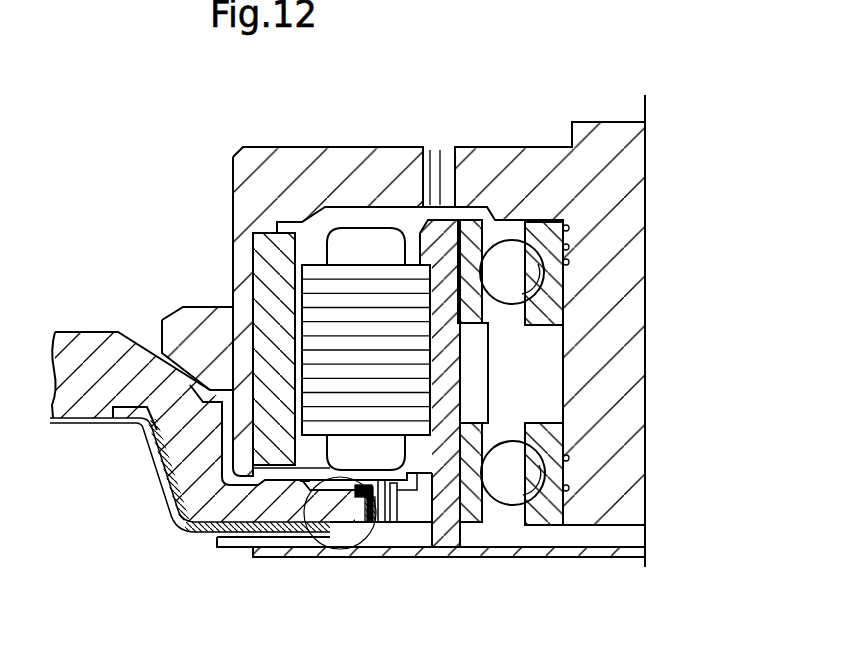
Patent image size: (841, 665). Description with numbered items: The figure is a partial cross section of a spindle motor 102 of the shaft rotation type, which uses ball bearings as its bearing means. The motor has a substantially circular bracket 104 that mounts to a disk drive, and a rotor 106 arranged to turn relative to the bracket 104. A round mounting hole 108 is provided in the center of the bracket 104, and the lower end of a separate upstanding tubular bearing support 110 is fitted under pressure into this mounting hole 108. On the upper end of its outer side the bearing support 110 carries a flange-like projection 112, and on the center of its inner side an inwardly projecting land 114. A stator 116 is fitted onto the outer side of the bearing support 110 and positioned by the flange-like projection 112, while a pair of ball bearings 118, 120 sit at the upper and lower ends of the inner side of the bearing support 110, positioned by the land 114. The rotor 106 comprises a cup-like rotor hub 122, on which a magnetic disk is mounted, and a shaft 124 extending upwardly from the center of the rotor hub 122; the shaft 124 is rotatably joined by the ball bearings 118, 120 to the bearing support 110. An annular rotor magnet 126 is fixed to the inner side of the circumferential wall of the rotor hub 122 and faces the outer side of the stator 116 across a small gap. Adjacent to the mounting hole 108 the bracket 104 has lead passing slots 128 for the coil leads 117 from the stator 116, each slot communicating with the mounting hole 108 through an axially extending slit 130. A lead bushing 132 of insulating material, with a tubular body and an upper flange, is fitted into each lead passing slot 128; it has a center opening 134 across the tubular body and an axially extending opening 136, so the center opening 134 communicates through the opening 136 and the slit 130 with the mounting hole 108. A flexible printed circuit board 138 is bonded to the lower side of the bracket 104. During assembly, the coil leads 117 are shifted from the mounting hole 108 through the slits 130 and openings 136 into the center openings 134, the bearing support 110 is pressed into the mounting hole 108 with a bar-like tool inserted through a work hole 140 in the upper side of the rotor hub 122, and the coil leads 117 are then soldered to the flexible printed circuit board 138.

The spindle motor 102 is at (408, 81).
The bracket 104 is at (178, 465).
The rotor 106 is at (411, 315).
The mounting hole 108 is at (510, 545).
The bearing support 110 is at (452, 243).
The flange-like projection 112 is at (418, 242).
The land 114 is at (487, 400).
The stator 116 is at (315, 312).
The coil leads 117 is at (385, 525).
The ball bearing 118 is at (567, 243).
The ball bearing 120 is at (567, 489).
The rotor hub 122 is at (233, 156).
The shaft 124 is at (628, 345).
The rotor magnet 126 is at (253, 253).
The lead passing slot 128 is at (362, 525).
The slit 130 is at (428, 512).
The lead bushing 132 is at (322, 522).
The center opening 134 is at (390, 500).
The opening 136 is at (397, 527).
The flexible printed circuit board 138 is at (190, 533).
The work hole 140 is at (438, 160).